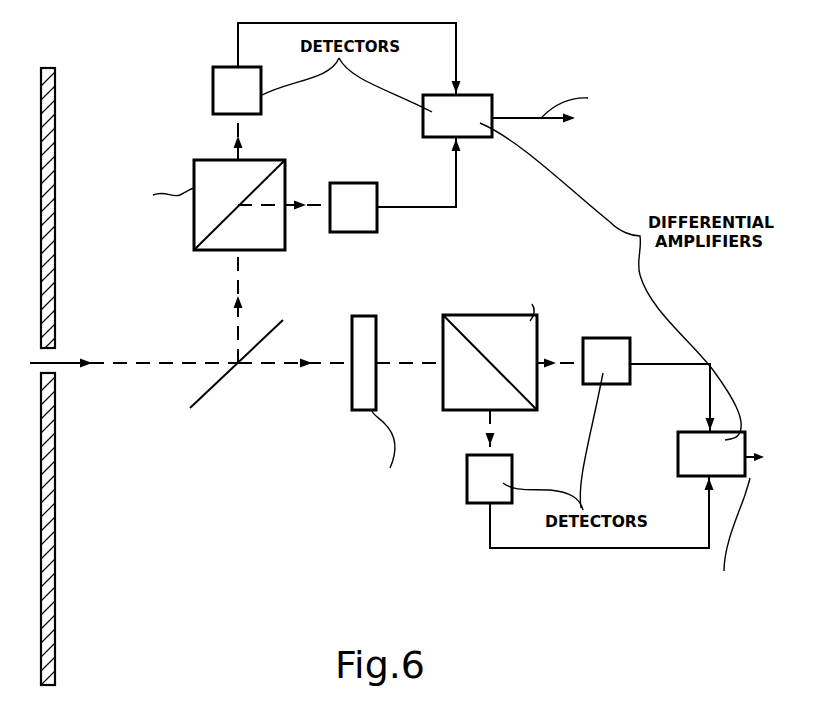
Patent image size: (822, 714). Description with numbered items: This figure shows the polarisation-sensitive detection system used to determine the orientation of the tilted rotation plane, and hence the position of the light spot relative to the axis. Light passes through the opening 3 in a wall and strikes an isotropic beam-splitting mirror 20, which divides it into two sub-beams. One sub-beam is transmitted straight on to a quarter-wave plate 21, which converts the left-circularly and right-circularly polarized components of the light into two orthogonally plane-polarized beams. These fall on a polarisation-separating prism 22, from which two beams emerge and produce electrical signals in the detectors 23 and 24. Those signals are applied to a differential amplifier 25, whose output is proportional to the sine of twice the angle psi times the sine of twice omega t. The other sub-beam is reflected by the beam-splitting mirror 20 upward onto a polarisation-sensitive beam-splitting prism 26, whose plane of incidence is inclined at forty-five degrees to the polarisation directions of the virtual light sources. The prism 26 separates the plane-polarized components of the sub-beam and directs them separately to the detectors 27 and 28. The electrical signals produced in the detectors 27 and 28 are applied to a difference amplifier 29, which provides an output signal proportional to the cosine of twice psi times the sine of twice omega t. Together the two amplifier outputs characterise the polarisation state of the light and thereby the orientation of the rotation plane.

The opening 3 is at (43, 362).
The isotropic beam-splitting mirror 20 is at (216, 378).
The λ/4 plate 21 is at (368, 412).
The polarisation-separating prism 22 is at (460, 412).
The detector 23 is at (467, 481).
The detector 24 is at (632, 353).
The differential amplifier 25 is at (678, 450).
The polarisation-sensitive beam-splitting prism 26 is at (194, 228).
The detector 27 is at (213, 95).
The detector 28 is at (348, 233).
The difference amplifier 29 is at (474, 138).